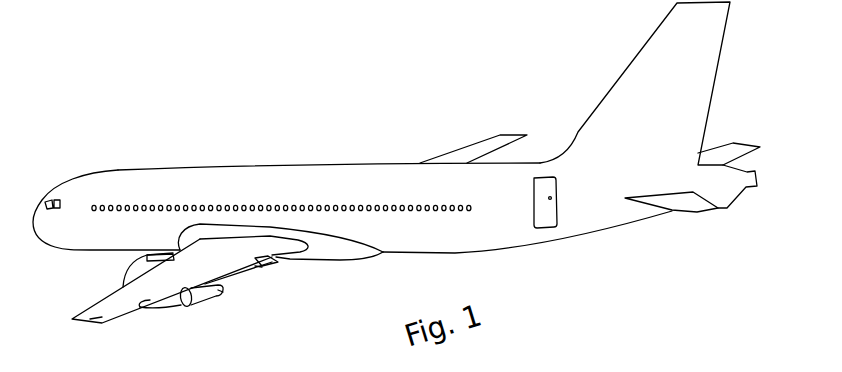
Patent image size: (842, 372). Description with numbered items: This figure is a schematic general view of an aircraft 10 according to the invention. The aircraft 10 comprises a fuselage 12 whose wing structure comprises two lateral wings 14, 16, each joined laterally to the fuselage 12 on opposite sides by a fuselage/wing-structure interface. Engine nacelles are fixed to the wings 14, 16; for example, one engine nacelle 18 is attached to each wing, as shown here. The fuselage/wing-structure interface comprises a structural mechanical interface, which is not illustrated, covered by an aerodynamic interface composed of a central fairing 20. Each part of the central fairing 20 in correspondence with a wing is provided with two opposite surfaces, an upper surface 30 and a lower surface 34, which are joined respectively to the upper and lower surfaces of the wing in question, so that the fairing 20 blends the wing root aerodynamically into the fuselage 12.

The aircraft 10 is at (466, 86).
The fuselage 12 is at (414, 228).
The lateral wing 14 is at (104, 309).
The lateral wing 16 is at (504, 136).
The engine nacelle 18 is at (138, 268).
The central fairing 20 is at (322, 266).
The upper surface 30 is at (220, 226).
The lower surface 34 is at (288, 266).